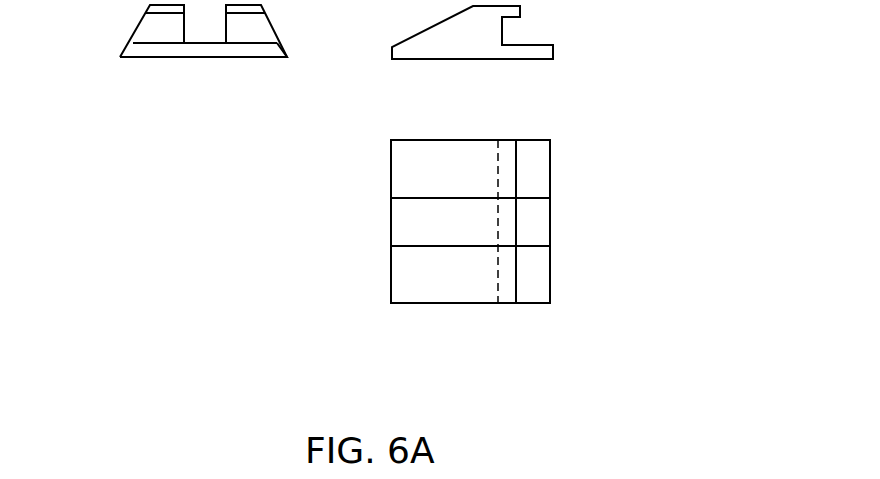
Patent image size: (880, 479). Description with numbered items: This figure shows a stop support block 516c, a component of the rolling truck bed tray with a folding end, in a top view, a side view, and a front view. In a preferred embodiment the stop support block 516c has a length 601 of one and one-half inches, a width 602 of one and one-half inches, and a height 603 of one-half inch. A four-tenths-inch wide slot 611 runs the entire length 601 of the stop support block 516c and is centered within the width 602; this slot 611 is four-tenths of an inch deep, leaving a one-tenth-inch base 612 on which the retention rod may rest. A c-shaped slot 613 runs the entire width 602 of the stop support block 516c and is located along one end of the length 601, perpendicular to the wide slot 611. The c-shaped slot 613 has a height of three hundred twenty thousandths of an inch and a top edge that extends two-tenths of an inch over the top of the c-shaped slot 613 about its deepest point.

The length 601 is at (200, 57).
The width 602 is at (392, 154).
The height 603 is at (135, 23).
The 0.4" wide slot 611 is at (410, 220).
The base 612 is at (285, 50).
The c-shaped slot 613 is at (522, 12).
The stop support block 516c is at (664, 278).